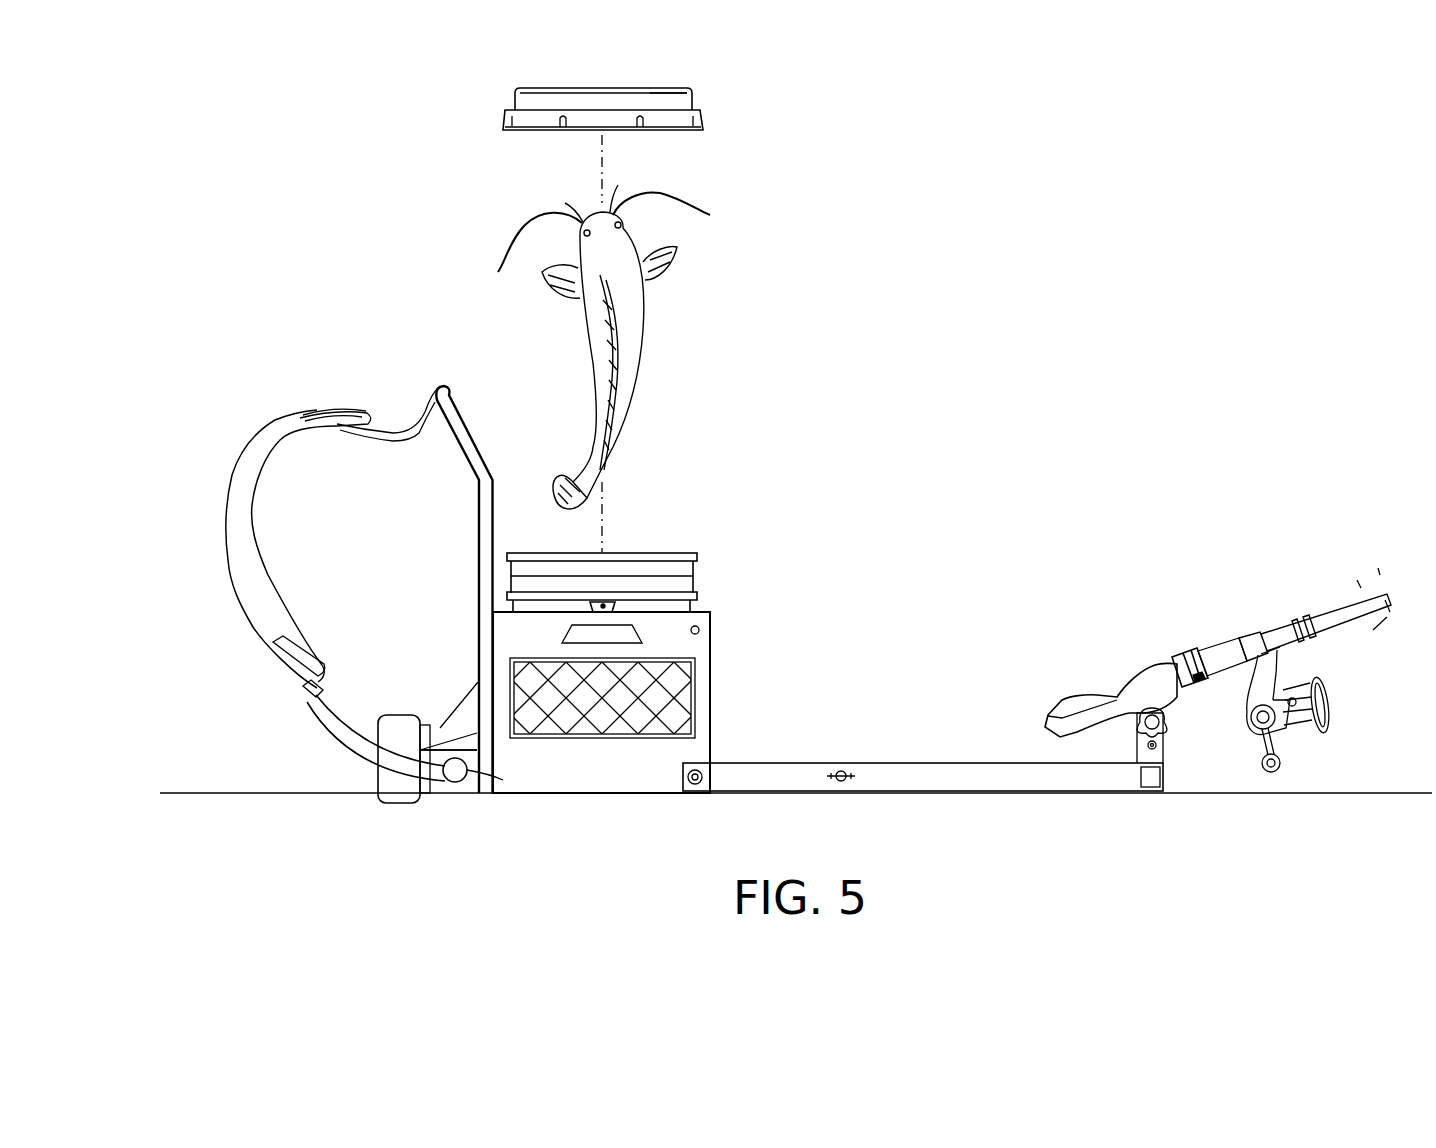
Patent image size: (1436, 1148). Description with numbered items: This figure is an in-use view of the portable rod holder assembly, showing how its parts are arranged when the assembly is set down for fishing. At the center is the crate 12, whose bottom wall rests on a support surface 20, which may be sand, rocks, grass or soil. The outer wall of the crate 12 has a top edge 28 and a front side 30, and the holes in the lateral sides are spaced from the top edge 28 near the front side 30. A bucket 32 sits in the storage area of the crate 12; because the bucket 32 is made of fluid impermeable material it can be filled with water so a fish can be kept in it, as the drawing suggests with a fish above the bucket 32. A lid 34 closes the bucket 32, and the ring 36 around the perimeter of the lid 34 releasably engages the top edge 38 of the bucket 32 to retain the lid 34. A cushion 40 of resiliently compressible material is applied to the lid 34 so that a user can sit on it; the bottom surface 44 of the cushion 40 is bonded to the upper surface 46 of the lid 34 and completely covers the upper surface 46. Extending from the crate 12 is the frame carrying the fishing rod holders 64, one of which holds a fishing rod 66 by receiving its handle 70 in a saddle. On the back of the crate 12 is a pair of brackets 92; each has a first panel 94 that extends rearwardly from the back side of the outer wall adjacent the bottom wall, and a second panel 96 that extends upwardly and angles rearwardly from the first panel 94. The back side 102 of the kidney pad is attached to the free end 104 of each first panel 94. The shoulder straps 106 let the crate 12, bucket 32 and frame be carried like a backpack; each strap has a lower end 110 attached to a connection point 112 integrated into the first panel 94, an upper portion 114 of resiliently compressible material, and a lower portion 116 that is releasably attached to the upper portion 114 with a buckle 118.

The crate 12 is at (718, 627).
The support surface 20 is at (199, 794).
The top edge 28 is at (655, 606).
The front side 30 is at (722, 697).
The bucket 32 is at (697, 565).
The lid 34 is at (700, 110).
The ring 36 is at (520, 131).
The top edge 38 is at (533, 553).
The cushion 40 is at (663, 90).
The bottom surface 44 is at (657, 100).
The upper surface 46 is at (552, 118).
The fishing rod holders 64 is at (1178, 698).
The fishing rod 66 is at (1328, 612).
The handle 70 is at (1047, 722).
The brackets 92 is at (439, 680).
The first panel 94 is at (470, 786).
The second panel 96 is at (473, 680).
The back side 102 is at (477, 748).
The free end 104 is at (378, 788).
The shoulder straps 106 is at (250, 438).
The lower end 110 is at (447, 780).
The connection point 112 is at (467, 772).
The upper portion 114 is at (233, 536).
The lower portion 116 is at (333, 738).
The buckle 118 is at (307, 690).